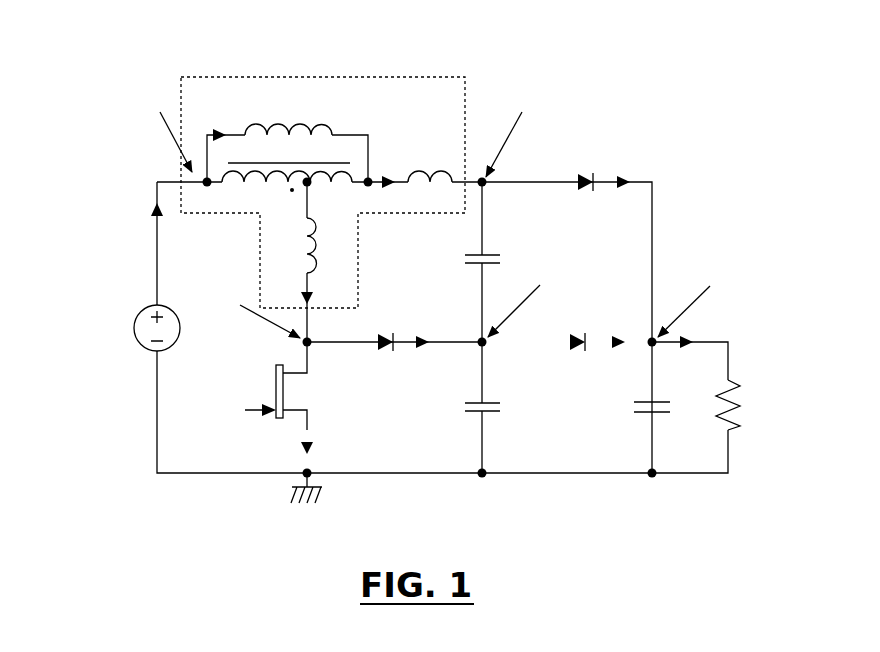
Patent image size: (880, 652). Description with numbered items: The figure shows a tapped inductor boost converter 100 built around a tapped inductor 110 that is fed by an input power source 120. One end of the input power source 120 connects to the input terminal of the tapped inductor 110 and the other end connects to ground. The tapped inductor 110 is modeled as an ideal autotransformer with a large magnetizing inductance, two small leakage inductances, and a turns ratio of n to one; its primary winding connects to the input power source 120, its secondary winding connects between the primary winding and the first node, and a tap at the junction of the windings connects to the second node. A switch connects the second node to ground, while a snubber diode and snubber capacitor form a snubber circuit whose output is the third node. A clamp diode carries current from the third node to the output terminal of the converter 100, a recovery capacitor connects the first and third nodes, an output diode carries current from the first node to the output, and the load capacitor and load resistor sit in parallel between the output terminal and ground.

The tapped inductor boost converter 100 is at (150, 41).
The tapped inductor 110 is at (465, 80).
The input power source 120 is at (137, 312).